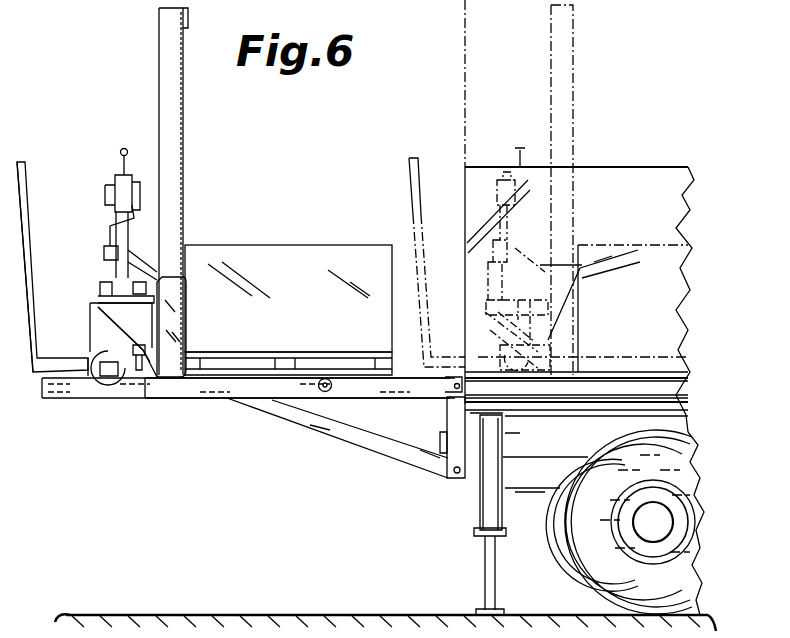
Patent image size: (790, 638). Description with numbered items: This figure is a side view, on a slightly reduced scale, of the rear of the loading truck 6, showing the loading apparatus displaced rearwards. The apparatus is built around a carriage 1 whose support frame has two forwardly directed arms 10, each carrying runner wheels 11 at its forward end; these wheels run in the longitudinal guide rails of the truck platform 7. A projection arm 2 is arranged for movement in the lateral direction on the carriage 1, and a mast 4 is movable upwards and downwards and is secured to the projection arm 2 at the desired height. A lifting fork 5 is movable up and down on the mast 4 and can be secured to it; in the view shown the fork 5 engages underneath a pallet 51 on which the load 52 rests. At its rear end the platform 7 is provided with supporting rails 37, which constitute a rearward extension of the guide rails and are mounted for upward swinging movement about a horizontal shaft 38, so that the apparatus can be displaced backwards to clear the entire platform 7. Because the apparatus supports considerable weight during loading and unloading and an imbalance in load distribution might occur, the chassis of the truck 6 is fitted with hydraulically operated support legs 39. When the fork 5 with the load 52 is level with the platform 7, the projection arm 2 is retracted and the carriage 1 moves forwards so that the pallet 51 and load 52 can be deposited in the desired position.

The carriage 1 is at (92, 282).
The projection arm 2 is at (105, 320).
The mast 4 is at (185, 165).
The lifting fork 5 is at (158, 370).
The loading truck 6 is at (463, 165).
The truck loading surface or platform 7 is at (660, 382).
The forwardly directed arms 10 is at (193, 385).
The runner wheels 11 is at (323, 393).
The supporting rails 37 is at (78, 399).
The horizontal shaft 38 is at (447, 395).
The hydraulically operated support legs 39 is at (484, 560).
The pallet 51 is at (283, 357).
The load 52 is at (276, 258).